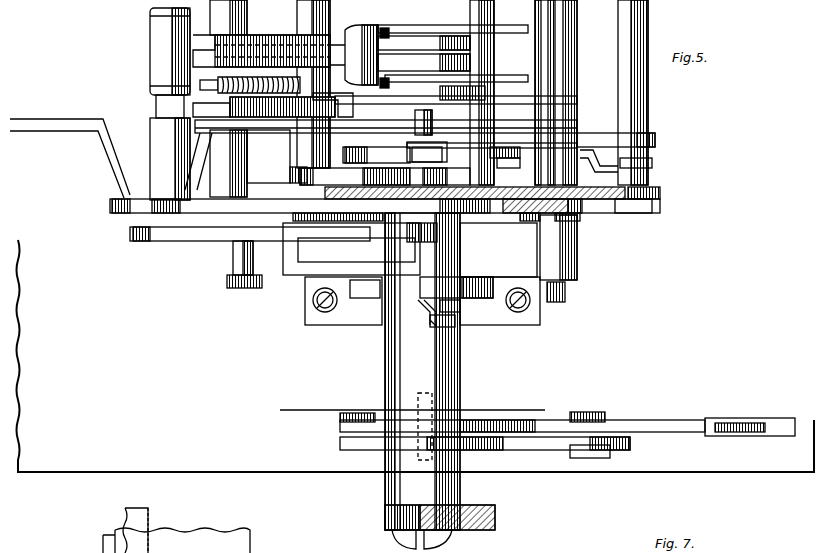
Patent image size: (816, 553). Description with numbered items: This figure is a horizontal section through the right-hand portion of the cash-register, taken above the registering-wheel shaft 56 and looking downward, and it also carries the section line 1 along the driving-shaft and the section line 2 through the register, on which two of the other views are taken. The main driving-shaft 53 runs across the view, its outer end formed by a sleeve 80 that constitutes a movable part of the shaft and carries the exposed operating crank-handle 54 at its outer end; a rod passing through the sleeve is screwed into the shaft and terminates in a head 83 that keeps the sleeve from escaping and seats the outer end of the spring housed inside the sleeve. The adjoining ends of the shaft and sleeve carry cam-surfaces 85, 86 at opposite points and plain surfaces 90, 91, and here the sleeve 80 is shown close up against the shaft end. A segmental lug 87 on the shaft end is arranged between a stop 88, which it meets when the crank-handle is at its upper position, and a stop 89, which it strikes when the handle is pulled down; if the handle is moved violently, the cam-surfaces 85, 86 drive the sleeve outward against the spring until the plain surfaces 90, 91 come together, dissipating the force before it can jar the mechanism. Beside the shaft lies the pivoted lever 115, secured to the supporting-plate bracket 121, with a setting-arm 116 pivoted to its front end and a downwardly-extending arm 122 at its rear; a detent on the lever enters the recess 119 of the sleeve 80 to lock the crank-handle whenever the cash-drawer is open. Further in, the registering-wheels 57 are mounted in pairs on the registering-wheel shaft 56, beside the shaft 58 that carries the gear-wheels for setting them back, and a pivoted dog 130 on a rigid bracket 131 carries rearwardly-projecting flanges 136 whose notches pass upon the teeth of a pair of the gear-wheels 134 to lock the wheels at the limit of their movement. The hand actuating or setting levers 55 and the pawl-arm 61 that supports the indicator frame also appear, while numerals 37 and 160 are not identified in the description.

The section line 1 is at (410, 405).
The section line 2 is at (545, 130).
The bar 37 is at (424, 43).
The main driving-shaft 53 is at (360, 249).
The exposed operating crank-handle 54 is at (496, 515).
The hand actuating or setting levers 55 is at (64, 119).
The registering-wheel shaft 56 is at (416, 117).
The registering-wheels 57 is at (424, 62).
The shaft carrying gear-wheels for setting back the registering-wheels 58 is at (495, 14).
The pawl-arm 61 is at (103, 535).
The sleeve 80 is at (422, 371).
The head 83 is at (422, 541).
The cam-surface 85 is at (420, 305).
The cam-surface 86 is at (460, 310).
The segmental lug 87 is at (468, 278).
The stop 88 is at (505, 278).
The stop 89 is at (357, 292).
The plain surface 90 is at (430, 320).
The plain surface 91 is at (455, 325).
The pivoted lever 115 is at (638, 420).
The setting-arm 116 is at (340, 416).
The recess 119 is at (430, 402).
The supporting-plate bracket 121 is at (527, 440).
The downwardly-extending arm 122 is at (770, 432).
The pivoted dog 130 is at (345, 71).
The rigid bracket 131 is at (262, 36).
The gear-wheel 134 is at (400, 30).
The rearwardly-projecting flanges 136 is at (383, 28).
The plate 160 is at (150, 512).